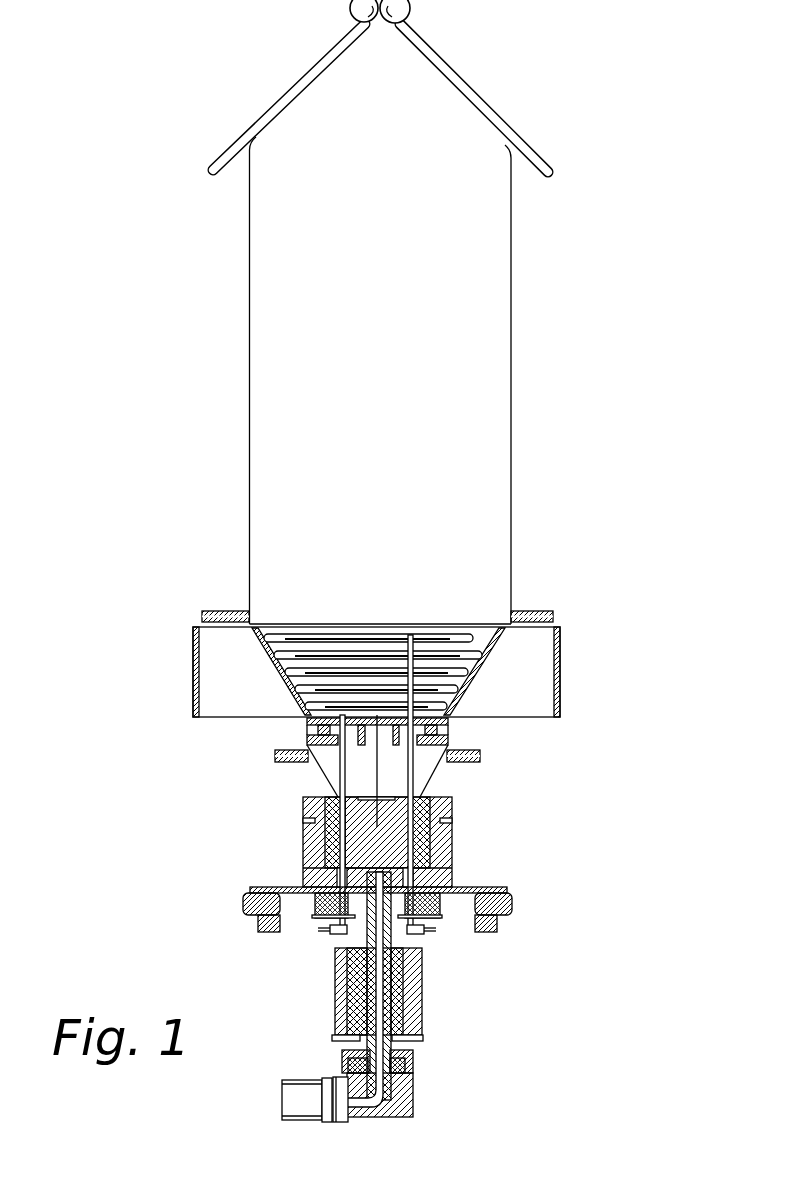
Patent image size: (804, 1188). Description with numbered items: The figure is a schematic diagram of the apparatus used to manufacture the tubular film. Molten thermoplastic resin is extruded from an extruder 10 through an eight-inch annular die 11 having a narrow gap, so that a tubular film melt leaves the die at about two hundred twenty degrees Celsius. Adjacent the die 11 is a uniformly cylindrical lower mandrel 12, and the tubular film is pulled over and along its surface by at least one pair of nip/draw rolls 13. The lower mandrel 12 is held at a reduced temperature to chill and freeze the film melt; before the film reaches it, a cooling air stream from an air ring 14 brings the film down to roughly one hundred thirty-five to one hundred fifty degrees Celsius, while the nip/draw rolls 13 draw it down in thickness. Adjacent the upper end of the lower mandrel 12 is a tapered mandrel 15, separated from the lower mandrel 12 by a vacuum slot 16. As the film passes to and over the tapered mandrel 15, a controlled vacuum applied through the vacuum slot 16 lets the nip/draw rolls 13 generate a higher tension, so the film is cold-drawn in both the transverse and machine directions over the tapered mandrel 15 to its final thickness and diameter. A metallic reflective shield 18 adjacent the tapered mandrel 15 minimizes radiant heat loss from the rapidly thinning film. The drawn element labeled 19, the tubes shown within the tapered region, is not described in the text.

The extruder 10 is at (281, 1093).
The annular die 11 is at (443, 848).
The lower mandrel 12 is at (450, 733).
The nip/draw rolls 13 is at (410, 4).
The air ring 14 is at (540, 612).
The tapered mandrel 15 is at (492, 650).
The vacuum slot 16 is at (307, 712).
The metallic reflective shield 18 is at (560, 705).
The tubes 19 is at (290, 657).